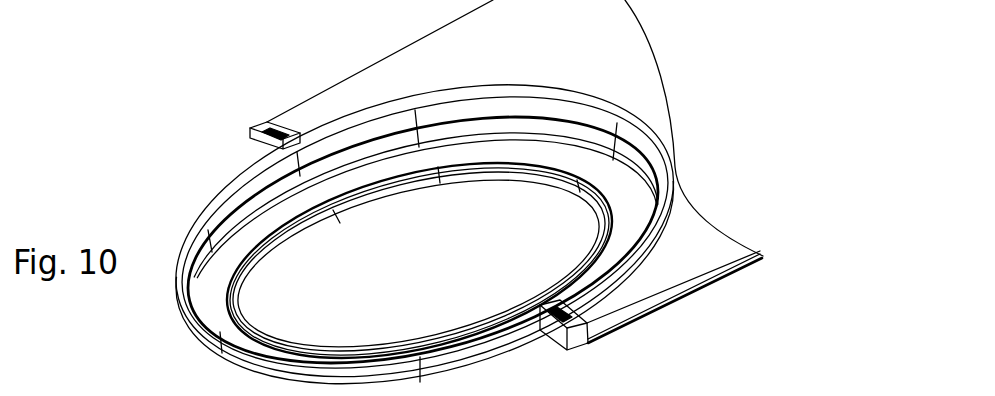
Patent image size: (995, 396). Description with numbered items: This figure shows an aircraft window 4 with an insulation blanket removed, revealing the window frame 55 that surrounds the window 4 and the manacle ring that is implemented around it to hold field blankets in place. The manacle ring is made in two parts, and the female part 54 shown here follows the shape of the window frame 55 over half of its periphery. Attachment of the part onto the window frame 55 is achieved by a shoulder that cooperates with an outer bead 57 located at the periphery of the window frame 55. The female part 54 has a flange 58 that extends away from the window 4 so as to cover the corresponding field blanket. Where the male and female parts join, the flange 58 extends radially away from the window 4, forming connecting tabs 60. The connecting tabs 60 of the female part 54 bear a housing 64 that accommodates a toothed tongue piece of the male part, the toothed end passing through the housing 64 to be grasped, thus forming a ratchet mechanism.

The window 4 is at (425, 215).
The female part 54 is at (560, 108).
The window frame 55 is at (273, 235).
The outer bead 57 is at (198, 242).
The flange 58 is at (518, 92).
The connecting tabs 60 is at (268, 126).
The housing 64 is at (264, 140).